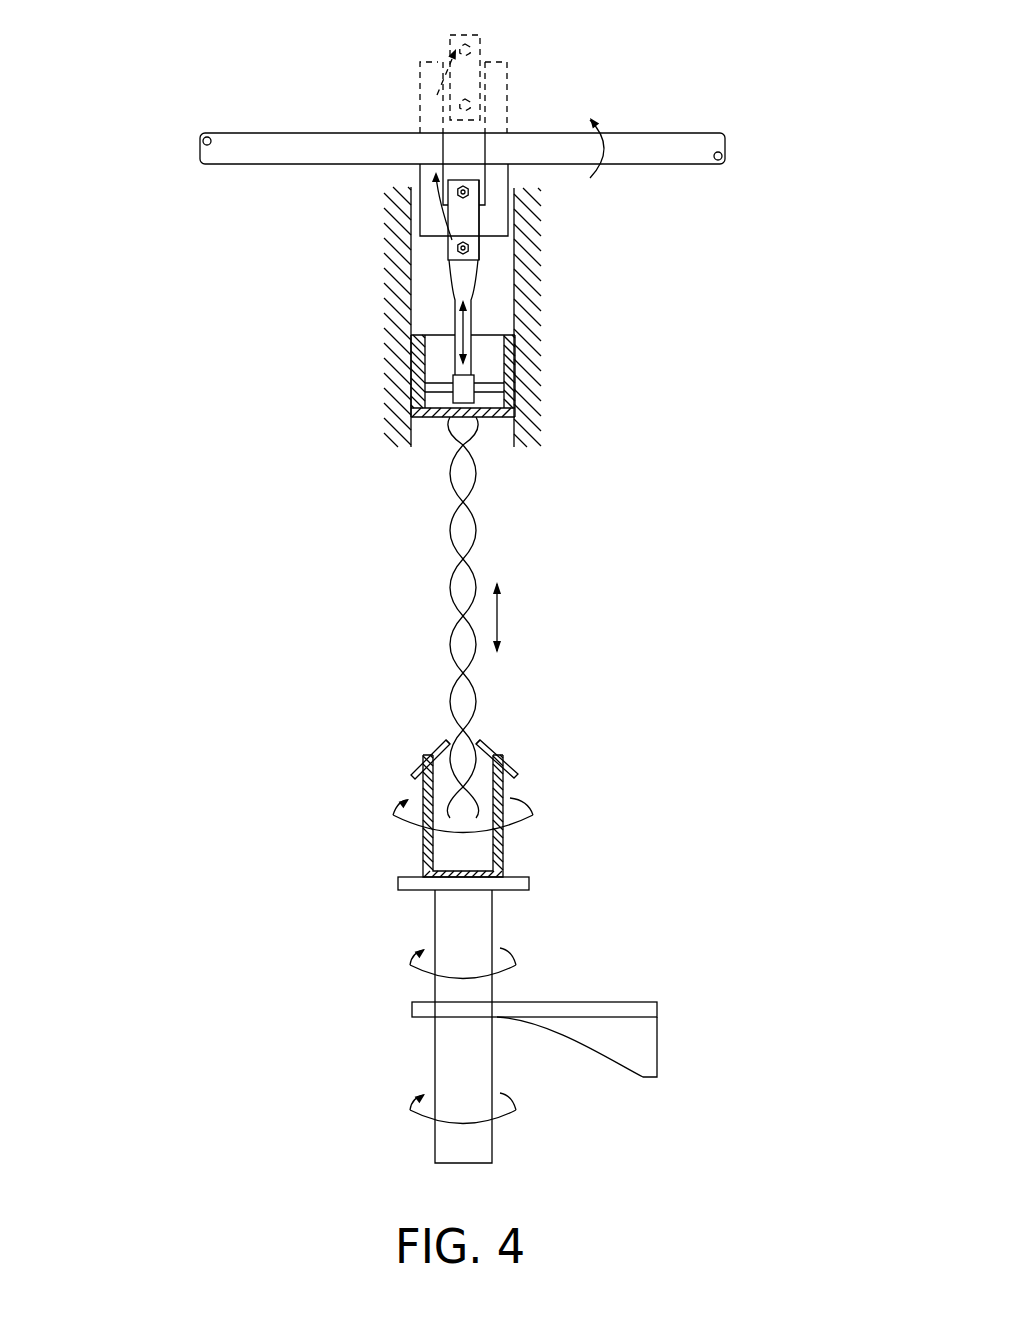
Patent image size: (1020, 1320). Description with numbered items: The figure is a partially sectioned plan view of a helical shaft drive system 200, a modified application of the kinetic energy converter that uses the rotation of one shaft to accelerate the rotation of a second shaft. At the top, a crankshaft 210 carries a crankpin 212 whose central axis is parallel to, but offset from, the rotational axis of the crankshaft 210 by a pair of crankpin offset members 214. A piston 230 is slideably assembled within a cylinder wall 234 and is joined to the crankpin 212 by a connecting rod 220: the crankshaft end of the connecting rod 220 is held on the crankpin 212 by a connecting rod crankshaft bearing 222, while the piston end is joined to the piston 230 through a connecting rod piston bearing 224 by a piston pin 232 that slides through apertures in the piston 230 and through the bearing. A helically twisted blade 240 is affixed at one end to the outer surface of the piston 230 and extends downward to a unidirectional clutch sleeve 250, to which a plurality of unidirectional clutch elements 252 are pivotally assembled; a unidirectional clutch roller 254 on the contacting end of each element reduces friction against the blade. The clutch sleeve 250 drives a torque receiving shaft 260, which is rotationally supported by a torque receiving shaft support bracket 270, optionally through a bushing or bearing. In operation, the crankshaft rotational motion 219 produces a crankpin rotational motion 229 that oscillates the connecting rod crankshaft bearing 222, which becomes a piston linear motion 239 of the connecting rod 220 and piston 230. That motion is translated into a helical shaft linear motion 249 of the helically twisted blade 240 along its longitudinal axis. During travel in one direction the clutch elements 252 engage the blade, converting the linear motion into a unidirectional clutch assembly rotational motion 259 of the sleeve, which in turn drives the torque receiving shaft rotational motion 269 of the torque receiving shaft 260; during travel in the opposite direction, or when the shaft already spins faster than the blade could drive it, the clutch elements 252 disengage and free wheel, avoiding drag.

The helical shaft drive system 200 is at (156, 70).
The crankshaft 210 is at (670, 145).
The crankpin 212 is at (468, 224).
The crankpin offset member 214 is at (498, 176).
The crankshaft rotational motion 219 is at (608, 148).
The connecting rod 220 is at (467, 288).
The connecting rod crankshaft bearing 222 is at (485, 216).
The connecting rod piston bearing 224 is at (520, 438).
The crankpin rotational motion 229 is at (443, 96).
The piston 230 is at (512, 352).
The piston pin 232 is at (465, 390).
The cylinder wall 234 is at (418, 292).
The piston linear motion 239 is at (457, 340).
The helically twisted blade 240 is at (465, 532).
The helical shaft linear motion 249 is at (500, 620).
The unidirectional clutch sleeve 250 is at (503, 840).
The unidirectional clutch element 252 is at (512, 763).
The unidirectional clutch roller 254 is at (488, 735).
The unidirectional clutch assembly rotational motion 259 is at (400, 826).
The torque receiving shaft 260 is at (492, 1057).
The torque receiving shaft rotational motion 269 is at (423, 972).
The torque receiving shaft support bracket 270 is at (627, 1025).